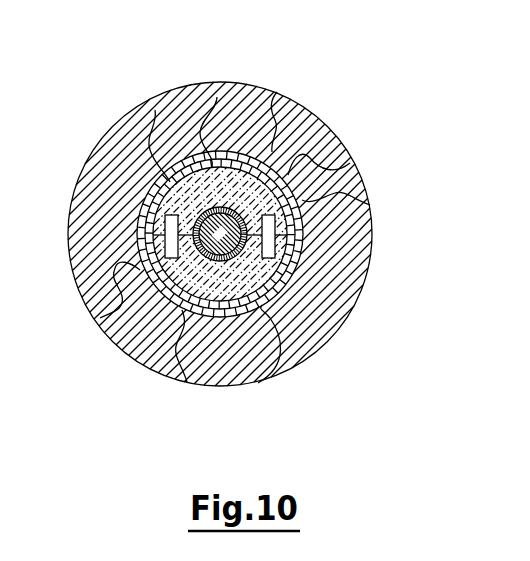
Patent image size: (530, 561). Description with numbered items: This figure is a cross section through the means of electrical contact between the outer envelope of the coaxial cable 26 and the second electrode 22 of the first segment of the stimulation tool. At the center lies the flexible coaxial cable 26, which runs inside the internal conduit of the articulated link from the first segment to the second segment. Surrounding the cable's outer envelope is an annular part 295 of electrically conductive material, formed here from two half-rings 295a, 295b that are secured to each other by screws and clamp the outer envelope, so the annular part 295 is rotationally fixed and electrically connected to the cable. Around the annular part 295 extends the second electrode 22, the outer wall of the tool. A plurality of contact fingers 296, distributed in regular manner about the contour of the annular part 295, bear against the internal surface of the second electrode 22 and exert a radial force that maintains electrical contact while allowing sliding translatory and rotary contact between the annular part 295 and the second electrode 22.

The second electrode 22 is at (277, 92).
The flexible coaxial cable 26 is at (291, 180).
The annular part 295 is at (370, 205).
The half-ring 295a is at (187, 382).
The half-ring 295b is at (217, 97).
The contact fingers 296 is at (155, 110).